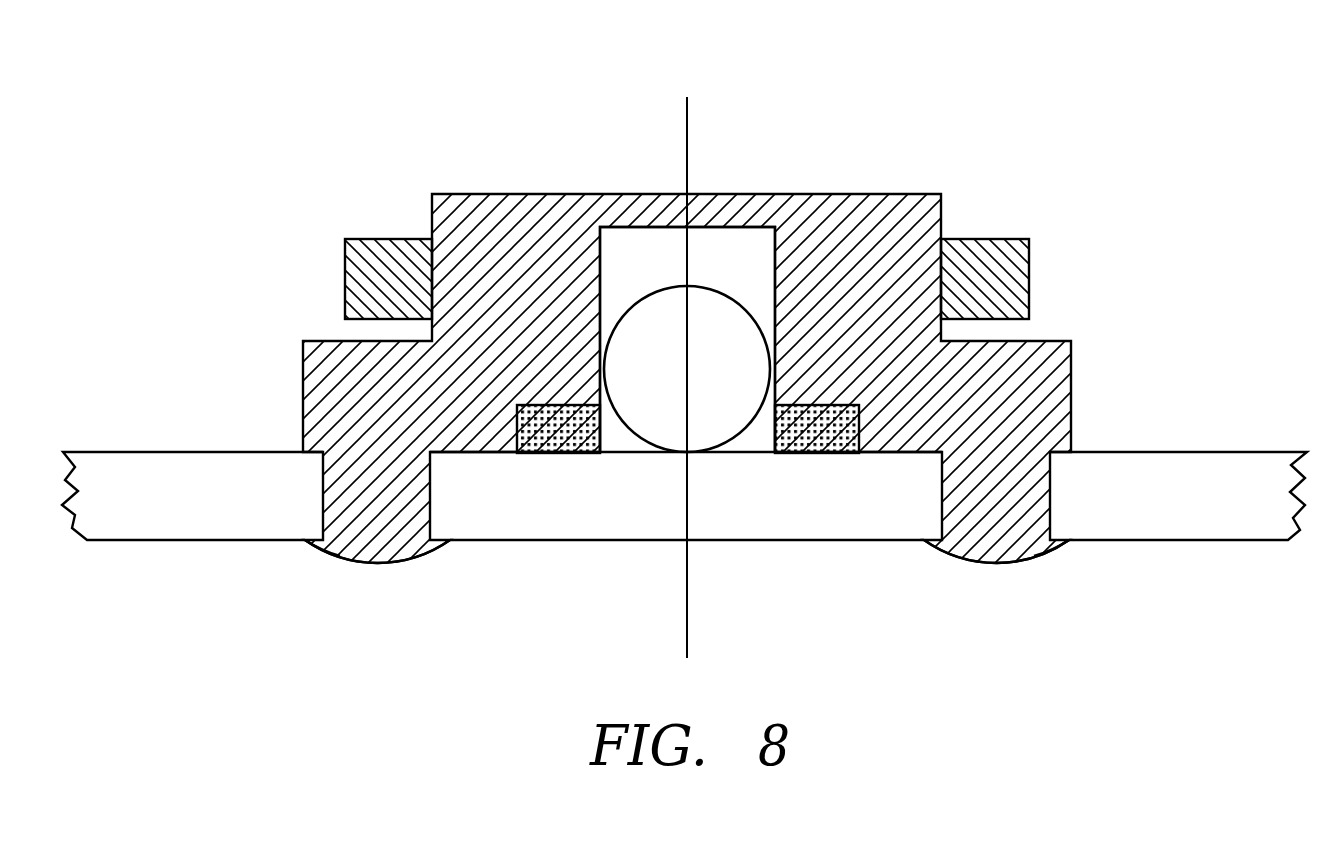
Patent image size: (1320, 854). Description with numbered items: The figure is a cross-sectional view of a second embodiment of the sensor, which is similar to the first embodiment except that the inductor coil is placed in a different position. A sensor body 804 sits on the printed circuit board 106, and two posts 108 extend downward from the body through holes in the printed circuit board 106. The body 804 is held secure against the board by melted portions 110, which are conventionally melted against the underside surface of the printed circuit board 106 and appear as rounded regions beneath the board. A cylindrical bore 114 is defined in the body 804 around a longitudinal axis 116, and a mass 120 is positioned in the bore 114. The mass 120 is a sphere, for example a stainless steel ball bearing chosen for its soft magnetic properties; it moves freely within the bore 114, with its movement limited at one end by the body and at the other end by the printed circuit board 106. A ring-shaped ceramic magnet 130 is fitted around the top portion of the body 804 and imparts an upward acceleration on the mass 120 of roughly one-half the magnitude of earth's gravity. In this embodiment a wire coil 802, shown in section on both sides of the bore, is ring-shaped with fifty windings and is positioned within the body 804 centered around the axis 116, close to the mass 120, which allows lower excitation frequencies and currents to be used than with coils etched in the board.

The printed circuit board 106 is at (1193, 475).
The posts 108 is at (418, 558).
The melted portions 110 is at (355, 546).
The cylindrical bore 114 is at (739, 245).
The longitudinal axis 116 is at (688, 105).
The mass 120 is at (752, 386).
The magnet 130 is at (370, 252).
The coil 802 is at (554, 463).
The body 804 is at (888, 213).